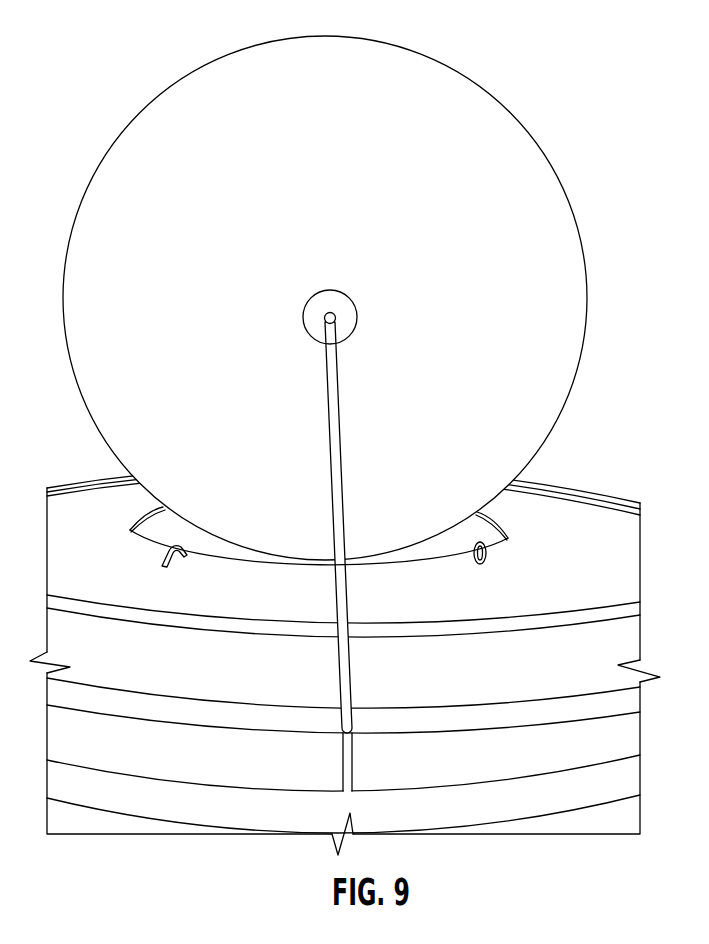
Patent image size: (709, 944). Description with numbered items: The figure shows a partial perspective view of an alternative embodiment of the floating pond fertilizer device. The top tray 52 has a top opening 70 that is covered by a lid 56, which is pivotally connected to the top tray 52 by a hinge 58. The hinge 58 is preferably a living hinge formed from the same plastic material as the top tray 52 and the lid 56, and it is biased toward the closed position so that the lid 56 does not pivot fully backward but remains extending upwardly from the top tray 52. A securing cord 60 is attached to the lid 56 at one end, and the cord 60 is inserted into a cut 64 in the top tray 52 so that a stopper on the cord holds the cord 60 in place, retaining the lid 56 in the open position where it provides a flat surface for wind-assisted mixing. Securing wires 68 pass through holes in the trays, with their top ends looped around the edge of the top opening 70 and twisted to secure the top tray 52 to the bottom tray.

The top tray 52 is at (623, 566).
The lid 56 is at (414, 78).
The hinge 58 is at (324, 561).
The securing cord 60 is at (335, 387).
The cut 64 is at (348, 758).
The securing wire 68 is at (162, 557).
The top opening 70 is at (455, 543).